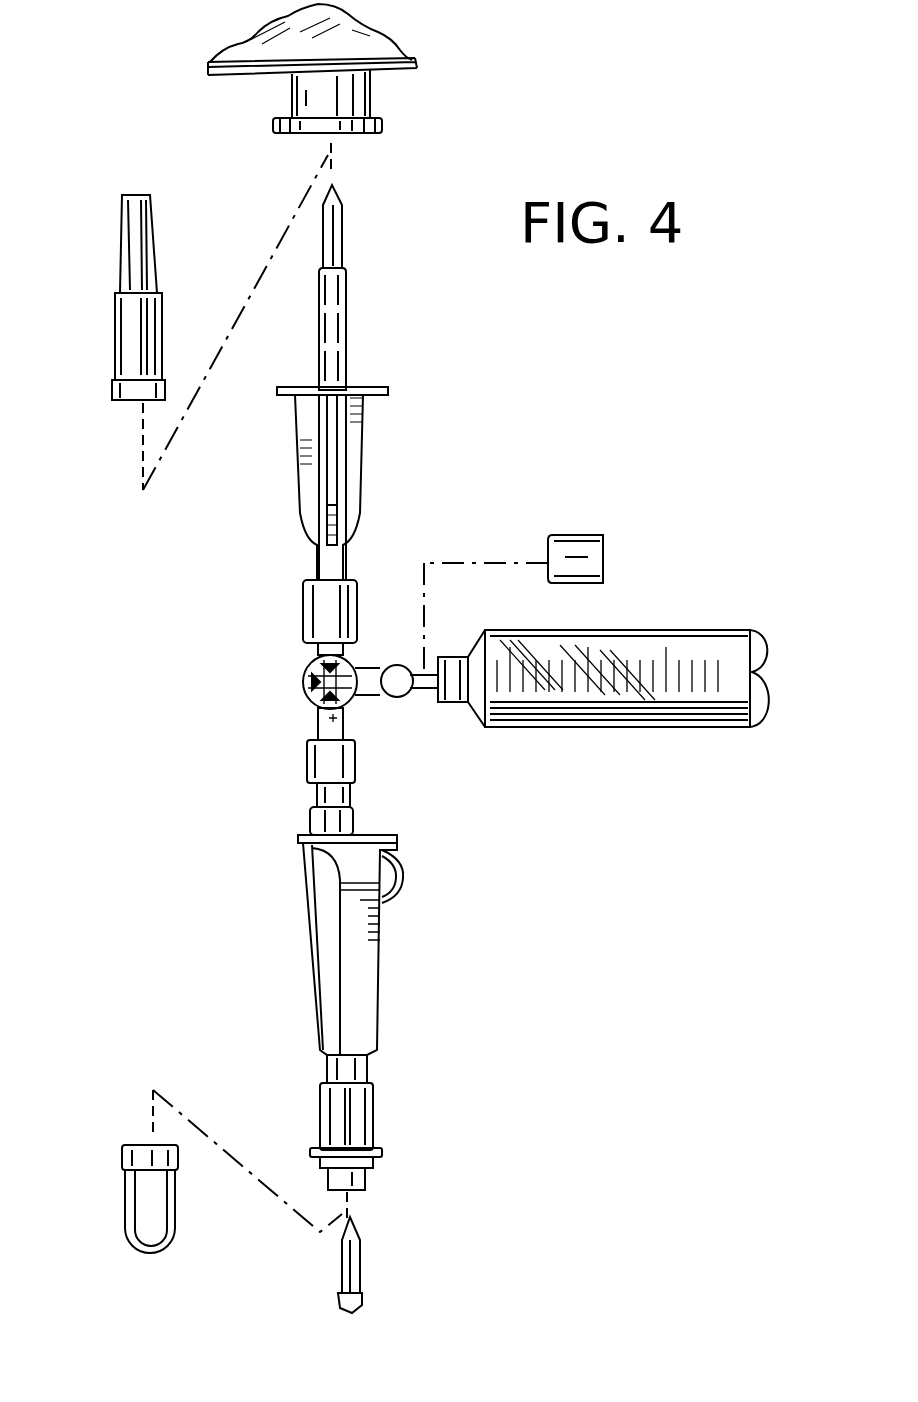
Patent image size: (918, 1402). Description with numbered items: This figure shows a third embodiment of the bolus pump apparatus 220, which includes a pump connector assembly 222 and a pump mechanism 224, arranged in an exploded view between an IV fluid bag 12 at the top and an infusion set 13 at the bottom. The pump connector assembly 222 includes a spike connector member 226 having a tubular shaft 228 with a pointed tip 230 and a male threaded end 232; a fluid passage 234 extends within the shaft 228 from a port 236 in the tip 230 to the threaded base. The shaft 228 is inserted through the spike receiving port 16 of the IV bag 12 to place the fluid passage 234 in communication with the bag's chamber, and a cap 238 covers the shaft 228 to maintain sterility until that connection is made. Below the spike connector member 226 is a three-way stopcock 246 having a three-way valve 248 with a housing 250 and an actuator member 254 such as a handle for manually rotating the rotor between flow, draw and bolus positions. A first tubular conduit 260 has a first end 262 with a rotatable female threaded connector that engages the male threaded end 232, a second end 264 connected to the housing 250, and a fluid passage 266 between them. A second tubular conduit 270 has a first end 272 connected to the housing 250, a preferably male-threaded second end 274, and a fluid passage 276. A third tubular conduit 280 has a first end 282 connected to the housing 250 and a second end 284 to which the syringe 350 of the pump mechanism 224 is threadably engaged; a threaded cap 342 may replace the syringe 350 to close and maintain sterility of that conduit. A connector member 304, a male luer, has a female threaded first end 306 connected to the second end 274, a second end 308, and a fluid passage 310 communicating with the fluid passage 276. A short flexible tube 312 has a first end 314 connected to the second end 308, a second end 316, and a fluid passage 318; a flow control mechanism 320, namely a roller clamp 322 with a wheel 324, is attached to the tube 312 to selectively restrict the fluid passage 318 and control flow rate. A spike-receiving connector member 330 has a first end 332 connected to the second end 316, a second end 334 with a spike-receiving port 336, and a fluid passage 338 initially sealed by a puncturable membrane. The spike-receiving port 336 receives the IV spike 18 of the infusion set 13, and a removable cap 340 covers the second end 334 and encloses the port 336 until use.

The IV fluid bag 12 is at (405, 72).
The spike receiving port 16 is at (362, 133).
The cap 238 is at (118, 267).
The pointed tip 230 is at (338, 187).
The port 236 is at (326, 188).
The tubular shaft 228 is at (347, 300).
The spike connector member 226 is at (388, 338).
The fluid passage 234 is at (335, 362).
The male threaded end 232 is at (345, 577).
The bolus pump apparatus 220 is at (550, 392).
The first end 262 is at (305, 600).
The fluid passage 266 is at (350, 605).
The pump connector assembly 222 is at (220, 606).
The second end 264 is at (318, 655).
The three-way stopcock 246 is at (276, 685).
The housing 250 is at (305, 672).
The three-way valve 248 is at (290, 710).
The first tubular conduit 260 is at (345, 660).
The first end 272 is at (349, 700).
The second tubular conduit 270 is at (350, 702).
The first end 282 is at (388, 696).
The actuator member 254 is at (448, 702).
The second end 284 is at (455, 704).
The third tubular conduit 280 is at (430, 664).
The threaded cap 342 is at (583, 535).
The pump mechanism 224 is at (683, 592).
The syringe 350 is at (650, 727).
The second end 274 is at (307, 760).
The fluid passage 276 is at (318, 722).
The female threaded first end 306 is at (310, 765).
The connector member 304 is at (351, 800).
The second end 308 is at (310, 812).
The fluid passage 310 is at (360, 815).
The first end 314 is at (296, 840).
The flow control mechanism 320 is at (402, 949).
The roller clamp 322 is at (392, 978).
The wheel 324 is at (403, 880).
The tube 312 is at (368, 1068).
The fluid passage 318 is at (340, 1070).
The second end 316 is at (373, 1080).
The spike-receiving connector member 330 is at (359, 1153).
The first end 332 is at (322, 1090).
The fluid passage 338 is at (342, 1127).
The second end 334 is at (366, 1181).
The spike-receiving port 336 is at (360, 1190).
The infusion set 13 is at (398, 1265).
The IV spike connector 18 is at (356, 1253).
The removable cap 340 is at (128, 1212).